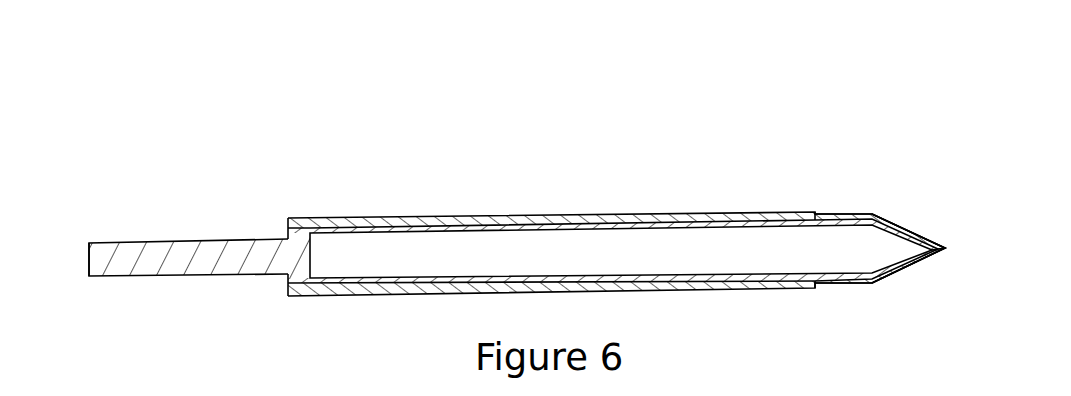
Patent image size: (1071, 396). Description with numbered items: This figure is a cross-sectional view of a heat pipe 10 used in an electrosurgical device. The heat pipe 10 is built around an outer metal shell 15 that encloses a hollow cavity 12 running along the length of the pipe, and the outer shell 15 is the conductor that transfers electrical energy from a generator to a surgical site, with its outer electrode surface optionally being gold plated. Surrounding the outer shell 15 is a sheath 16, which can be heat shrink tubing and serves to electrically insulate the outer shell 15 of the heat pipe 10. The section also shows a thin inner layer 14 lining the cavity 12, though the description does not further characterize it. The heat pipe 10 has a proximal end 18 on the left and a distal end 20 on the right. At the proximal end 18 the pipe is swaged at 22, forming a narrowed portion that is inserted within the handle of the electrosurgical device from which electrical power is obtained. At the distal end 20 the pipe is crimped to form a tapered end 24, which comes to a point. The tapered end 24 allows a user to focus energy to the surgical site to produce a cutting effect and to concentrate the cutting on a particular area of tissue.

The heat pipe 10 is at (590, 118).
The cavity 12 is at (353, 245).
The inner tube layer 14 is at (868, 282).
The outer metal shell 15 is at (525, 227).
The sheath 16 is at (653, 215).
The proximal end 18 is at (100, 208).
The distal end 20 is at (921, 182).
The swaged portion 22 is at (188, 242).
The tapered end 24 is at (925, 215).